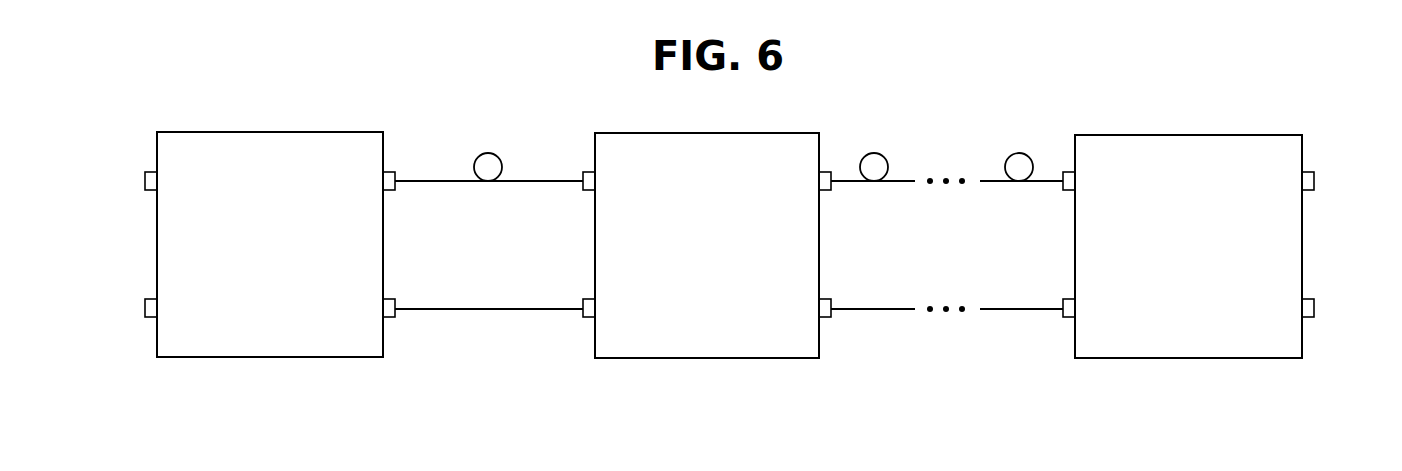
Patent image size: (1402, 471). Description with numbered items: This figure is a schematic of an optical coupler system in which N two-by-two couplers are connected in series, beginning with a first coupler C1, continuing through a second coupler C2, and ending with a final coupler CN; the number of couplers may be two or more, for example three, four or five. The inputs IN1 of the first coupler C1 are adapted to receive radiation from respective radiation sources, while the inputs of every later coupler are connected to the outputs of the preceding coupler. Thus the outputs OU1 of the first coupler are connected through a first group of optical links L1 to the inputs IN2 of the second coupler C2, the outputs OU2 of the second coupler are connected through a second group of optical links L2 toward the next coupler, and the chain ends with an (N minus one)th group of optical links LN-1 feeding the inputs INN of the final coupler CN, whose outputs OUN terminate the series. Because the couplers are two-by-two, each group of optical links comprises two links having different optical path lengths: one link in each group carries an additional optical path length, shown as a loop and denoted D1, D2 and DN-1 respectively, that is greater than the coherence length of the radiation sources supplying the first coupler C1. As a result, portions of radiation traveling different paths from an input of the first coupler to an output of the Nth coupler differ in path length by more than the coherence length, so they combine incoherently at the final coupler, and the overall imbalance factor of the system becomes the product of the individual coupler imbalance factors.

The first coupler C1 is at (277, 132).
The second coupler C2 is at (718, 133).
The final coupler CN is at (1183, 135).
The inputs of the first coupler IN1 is at (149, 172).
The inputs of the second coupler IN2 is at (588, 172).
The inputs of the Nth coupler INN is at (1068, 172).
The outputs of the first coupler OU1 is at (390, 172).
The outputs of the second coupler OU2 is at (827, 172).
The outputs of the Nth coupler OUN is at (1310, 172).
The first group of optical links L1 is at (527, 182).
The second group of optical links L2 is at (893, 182).
The (N−1)th group of optical links LN-1 is at (1000, 182).
The additional optical path length of first link group D1 is at (483, 153).
The additional optical path length of second link group D2 is at (884, 158).
The additional optical path length of (N−1)th link group DN-1 is at (1009, 159).